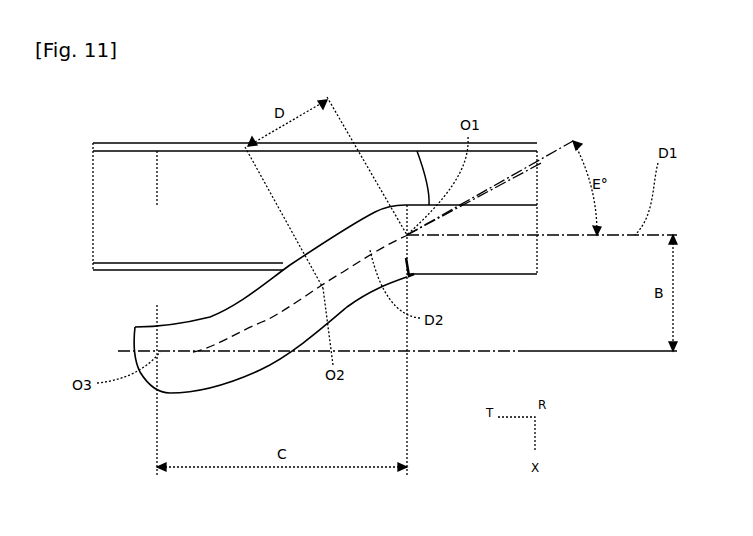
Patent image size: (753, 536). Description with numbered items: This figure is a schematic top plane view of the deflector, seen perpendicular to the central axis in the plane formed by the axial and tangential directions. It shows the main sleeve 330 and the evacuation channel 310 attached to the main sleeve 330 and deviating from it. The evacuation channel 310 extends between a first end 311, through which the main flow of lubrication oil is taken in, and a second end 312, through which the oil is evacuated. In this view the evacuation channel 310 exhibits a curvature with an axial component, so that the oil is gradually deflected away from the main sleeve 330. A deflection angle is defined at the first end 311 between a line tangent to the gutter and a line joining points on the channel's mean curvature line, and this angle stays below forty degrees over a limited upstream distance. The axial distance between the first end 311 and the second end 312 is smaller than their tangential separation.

The main sleeve 330 is at (188, 180).
The evacuation channel 310 is at (215, 393).
The first end 311 is at (408, 247).
The second end 312 is at (134, 326).